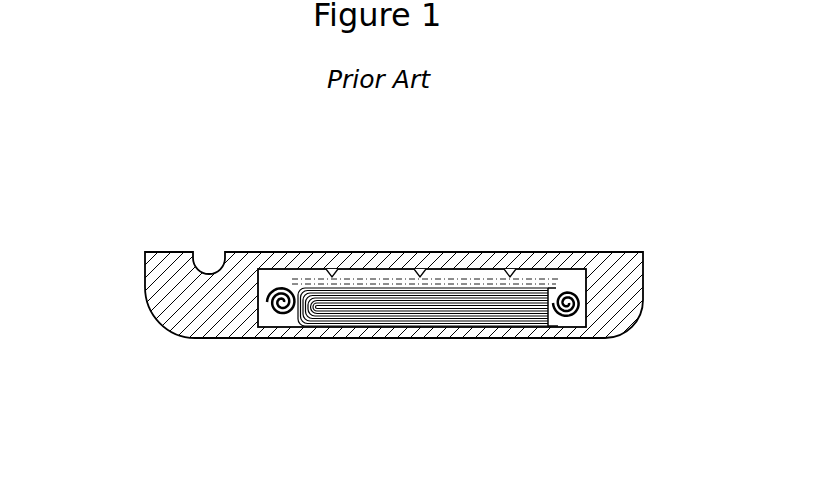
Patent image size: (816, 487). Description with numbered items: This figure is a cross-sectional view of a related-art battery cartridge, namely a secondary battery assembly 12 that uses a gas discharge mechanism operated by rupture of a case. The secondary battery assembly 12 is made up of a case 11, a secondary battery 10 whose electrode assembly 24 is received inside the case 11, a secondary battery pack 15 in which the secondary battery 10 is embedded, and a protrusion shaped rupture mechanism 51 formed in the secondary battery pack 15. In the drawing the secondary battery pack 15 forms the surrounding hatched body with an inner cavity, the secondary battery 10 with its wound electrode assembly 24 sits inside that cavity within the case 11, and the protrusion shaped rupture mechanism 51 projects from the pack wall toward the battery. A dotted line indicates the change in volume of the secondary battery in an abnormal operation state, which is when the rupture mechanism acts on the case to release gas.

The secondary battery assembly 12 is at (125, 218).
The secondary battery 10 is at (285, 282).
The secondary battery pack 15 is at (627, 287).
The protrusion shaped rupture mechanism 51 is at (512, 276).
The electrode assembly 24 is at (392, 328).
The case 11 is at (547, 328).